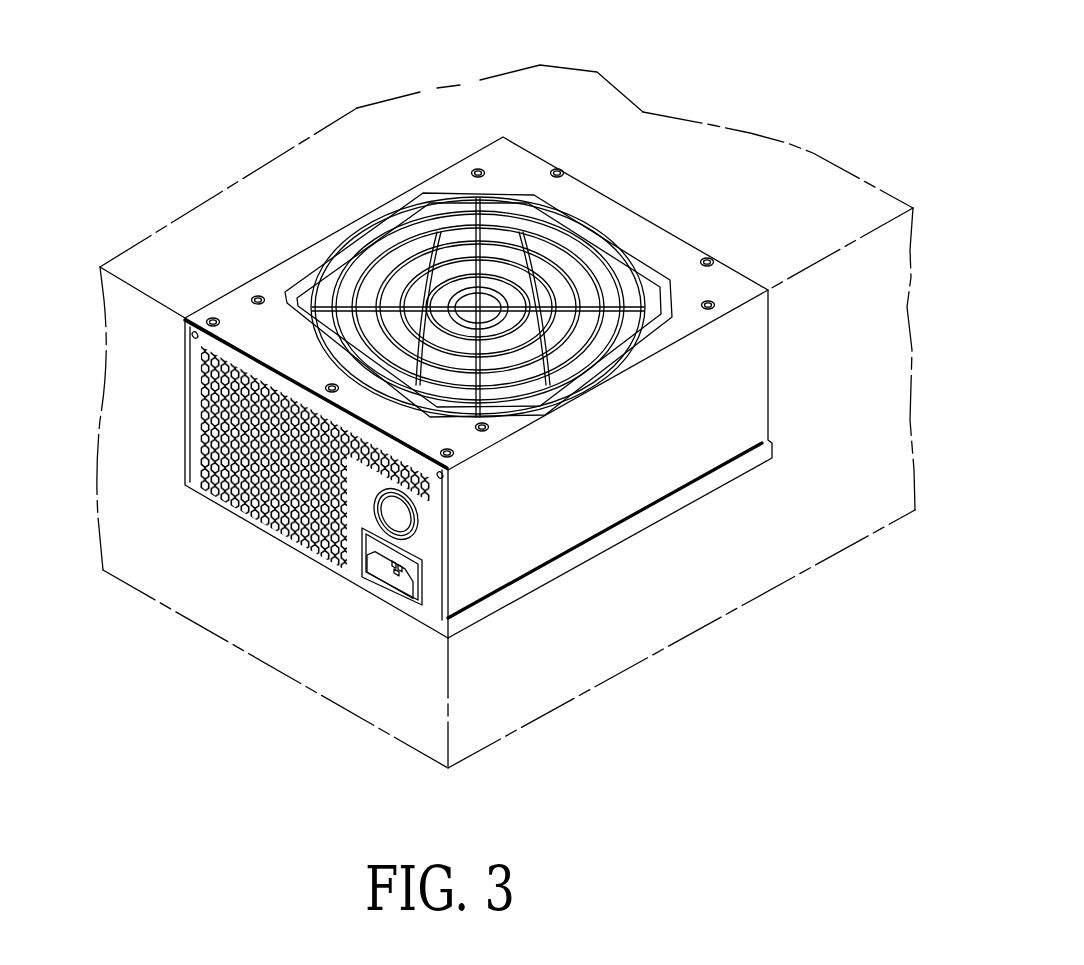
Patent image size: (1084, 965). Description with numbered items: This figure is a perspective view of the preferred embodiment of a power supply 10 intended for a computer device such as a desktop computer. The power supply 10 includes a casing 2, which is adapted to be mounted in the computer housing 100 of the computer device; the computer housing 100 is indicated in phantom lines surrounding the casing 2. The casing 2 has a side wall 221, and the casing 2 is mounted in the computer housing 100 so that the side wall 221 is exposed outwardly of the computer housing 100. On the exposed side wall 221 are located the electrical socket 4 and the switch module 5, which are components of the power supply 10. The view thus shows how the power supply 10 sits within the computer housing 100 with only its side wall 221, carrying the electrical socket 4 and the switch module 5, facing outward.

The computer housing 100 is at (390, 132).
The power supply 10 is at (424, 420).
The casing 2 is at (668, 223).
The side wall 221 is at (193, 483).
The electrical socket 4 is at (395, 578).
The switch module 5 is at (427, 527).